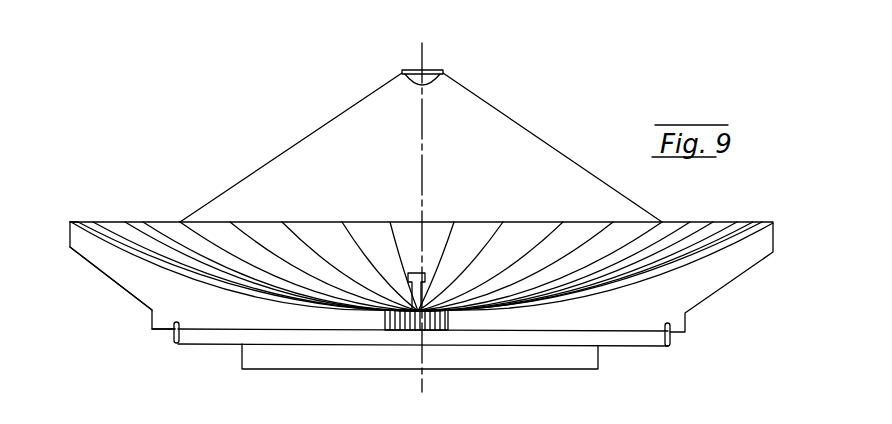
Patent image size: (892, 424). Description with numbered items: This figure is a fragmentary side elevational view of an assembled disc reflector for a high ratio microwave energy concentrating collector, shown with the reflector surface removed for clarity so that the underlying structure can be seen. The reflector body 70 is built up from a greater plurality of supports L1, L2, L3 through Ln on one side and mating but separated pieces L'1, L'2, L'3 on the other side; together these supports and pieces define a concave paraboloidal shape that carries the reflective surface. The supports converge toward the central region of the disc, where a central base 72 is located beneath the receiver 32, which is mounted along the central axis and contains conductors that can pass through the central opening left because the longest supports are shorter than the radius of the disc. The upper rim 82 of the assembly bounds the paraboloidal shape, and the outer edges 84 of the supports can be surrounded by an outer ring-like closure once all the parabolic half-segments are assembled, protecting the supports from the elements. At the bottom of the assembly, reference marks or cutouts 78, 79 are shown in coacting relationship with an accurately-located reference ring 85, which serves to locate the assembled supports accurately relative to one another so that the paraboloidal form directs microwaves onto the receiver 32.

The collector housing 70 is at (100, 257).
The detector array 72 is at (385, 316).
The receiver 32 is at (425, 282).
The reference mark or cutout 78 is at (178, 320).
The reference mark or cutout 79 is at (665, 325).
The rim 82 is at (67, 220).
The edges 84 is at (128, 292).
The reference ring 85 is at (176, 344).
The support L1 is at (80, 226).
The support L2 is at (97, 230).
The support L3 is at (122, 237).
The support Ln is at (400, 235).
The mating separated piece L'1 is at (611, 266).
The mating separated piece L'2 is at (582, 247).
The mating separated piece L'3 is at (565, 246).